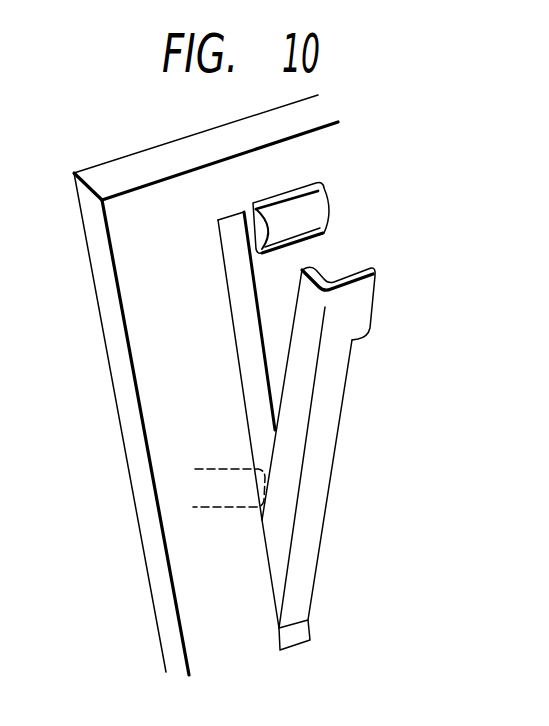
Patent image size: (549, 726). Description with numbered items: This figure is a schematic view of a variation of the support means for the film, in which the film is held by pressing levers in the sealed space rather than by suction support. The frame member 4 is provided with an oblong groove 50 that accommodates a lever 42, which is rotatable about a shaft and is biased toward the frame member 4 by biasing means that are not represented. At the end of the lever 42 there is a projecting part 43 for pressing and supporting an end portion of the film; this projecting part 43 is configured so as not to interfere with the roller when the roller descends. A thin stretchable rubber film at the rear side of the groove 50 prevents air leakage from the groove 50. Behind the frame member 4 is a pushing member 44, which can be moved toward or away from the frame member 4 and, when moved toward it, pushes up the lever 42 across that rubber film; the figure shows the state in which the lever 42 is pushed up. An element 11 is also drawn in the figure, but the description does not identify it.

The frame member 4 is at (102, 177).
The clip 11 is at (318, 212).
The lever 42 is at (366, 458).
The projecting part 43 is at (358, 308).
The pushing member 44 is at (227, 487).
The oblong groove 50 is at (249, 362).